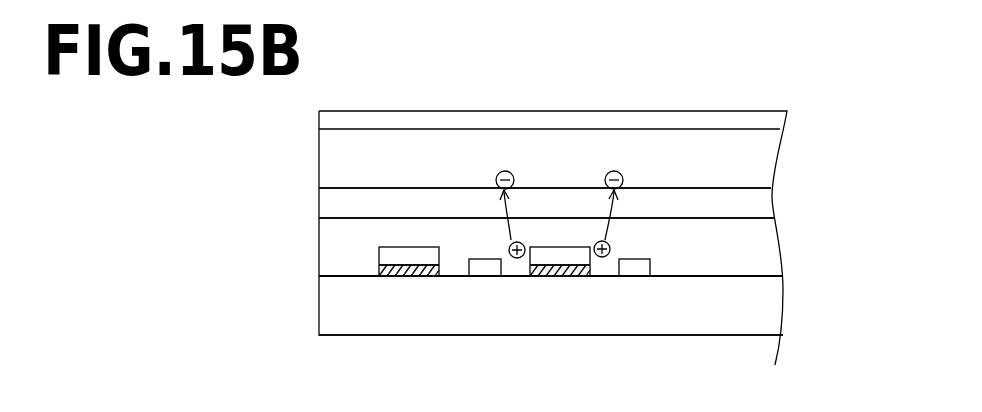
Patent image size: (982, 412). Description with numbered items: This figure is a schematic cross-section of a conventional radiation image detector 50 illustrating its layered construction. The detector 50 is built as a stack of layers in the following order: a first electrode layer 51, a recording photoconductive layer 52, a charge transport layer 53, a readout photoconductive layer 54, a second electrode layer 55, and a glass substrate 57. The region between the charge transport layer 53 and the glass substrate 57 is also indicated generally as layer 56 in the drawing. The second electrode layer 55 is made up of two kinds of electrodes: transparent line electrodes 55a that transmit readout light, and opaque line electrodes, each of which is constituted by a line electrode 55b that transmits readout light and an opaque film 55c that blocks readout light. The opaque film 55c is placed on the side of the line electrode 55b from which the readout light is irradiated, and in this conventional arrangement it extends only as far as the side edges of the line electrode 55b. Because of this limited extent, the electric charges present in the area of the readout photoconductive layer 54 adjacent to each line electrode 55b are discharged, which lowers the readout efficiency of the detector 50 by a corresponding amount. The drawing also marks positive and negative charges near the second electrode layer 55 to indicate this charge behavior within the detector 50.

The radiation image detector 50 is at (800, 73).
The first electrode layer 51 is at (328, 119).
The recording photoconductive layer 52 is at (328, 157).
The charge transport layer 53 is at (328, 203).
The readout photoconductive layer 54 is at (328, 248).
The second electrode layer 55 is at (793, 266).
The transparent line electrodes 55a is at (477, 260).
The line electrode 55b is at (409, 253).
The opaque film 55c is at (388, 276).
The layer 56 is at (757, 186).
The glass substrate 57 is at (328, 293).